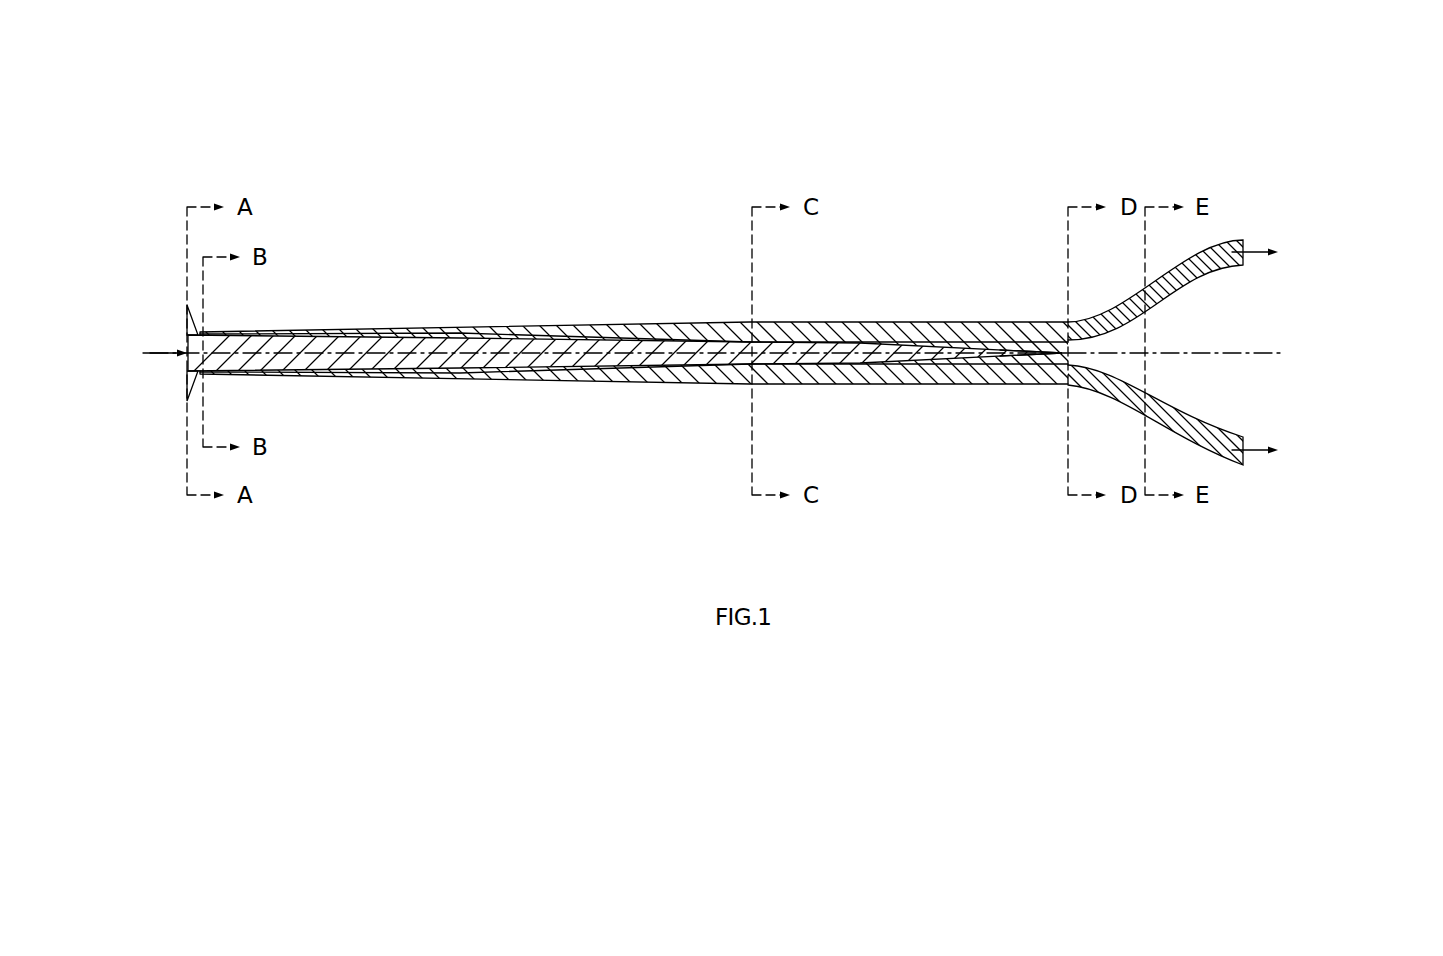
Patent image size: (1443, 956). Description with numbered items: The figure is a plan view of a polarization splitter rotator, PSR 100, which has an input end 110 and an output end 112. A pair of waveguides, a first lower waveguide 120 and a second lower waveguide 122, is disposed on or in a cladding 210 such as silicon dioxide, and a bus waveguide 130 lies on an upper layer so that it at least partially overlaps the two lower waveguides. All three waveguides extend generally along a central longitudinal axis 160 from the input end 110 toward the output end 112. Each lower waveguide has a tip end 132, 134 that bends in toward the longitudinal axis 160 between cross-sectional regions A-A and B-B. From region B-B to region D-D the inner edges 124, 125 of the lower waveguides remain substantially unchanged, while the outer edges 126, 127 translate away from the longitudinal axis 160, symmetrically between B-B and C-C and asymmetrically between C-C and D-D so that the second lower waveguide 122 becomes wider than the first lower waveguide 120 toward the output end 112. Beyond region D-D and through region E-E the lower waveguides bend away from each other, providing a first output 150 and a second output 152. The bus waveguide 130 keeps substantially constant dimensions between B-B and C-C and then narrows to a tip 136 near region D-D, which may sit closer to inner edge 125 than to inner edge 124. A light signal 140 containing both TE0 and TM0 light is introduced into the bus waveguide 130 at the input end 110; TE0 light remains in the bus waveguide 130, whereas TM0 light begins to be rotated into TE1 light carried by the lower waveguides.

The PSR 100 is at (270, 156).
The input end 110 is at (156, 323).
The output end 112 is at (1362, 319).
The first lower waveguide 120 is at (900, 330).
The second lower waveguide 122 is at (928, 378).
The inner edge 124 is at (1010, 342).
The inner edge 125 is at (1015, 365).
The outer edge 126 is at (836, 322).
The outer edge 127 is at (838, 385).
The bus waveguide 130 is at (538, 345).
The tip end 132 is at (188, 312).
The tip end 134 is at (187, 398).
The tip 136 is at (1068, 357).
The light signal 140 is at (155, 358).
The first output 150 is at (1243, 243).
The second output 152 is at (1243, 465).
The longitudinal axis 160 is at (1163, 353).
The cladding 210 is at (508, 449).